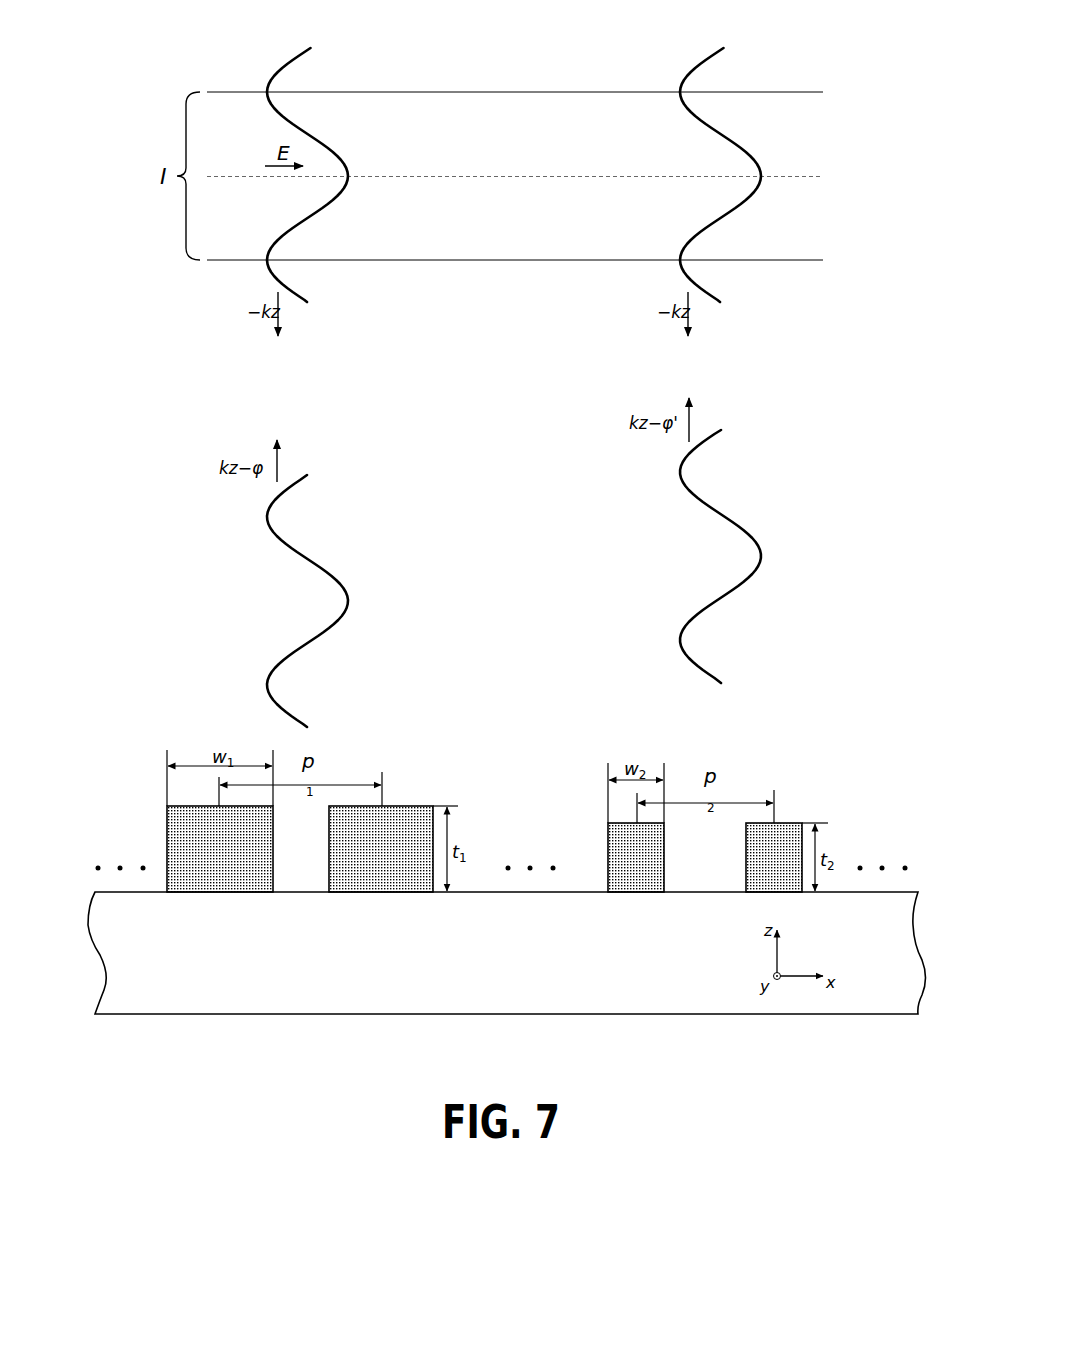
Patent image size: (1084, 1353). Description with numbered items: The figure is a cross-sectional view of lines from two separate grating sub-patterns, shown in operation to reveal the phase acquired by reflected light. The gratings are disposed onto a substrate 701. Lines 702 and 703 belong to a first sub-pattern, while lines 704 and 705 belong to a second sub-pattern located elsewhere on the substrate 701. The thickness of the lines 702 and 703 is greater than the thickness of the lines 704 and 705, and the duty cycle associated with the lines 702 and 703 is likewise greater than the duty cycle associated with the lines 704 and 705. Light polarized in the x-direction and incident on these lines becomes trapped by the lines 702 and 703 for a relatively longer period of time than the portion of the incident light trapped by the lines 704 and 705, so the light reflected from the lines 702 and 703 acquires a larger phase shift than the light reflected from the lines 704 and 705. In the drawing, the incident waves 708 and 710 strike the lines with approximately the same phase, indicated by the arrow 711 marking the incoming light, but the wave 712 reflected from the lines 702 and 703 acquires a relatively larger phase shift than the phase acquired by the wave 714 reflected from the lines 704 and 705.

The substrate 701 is at (553, 972).
The line 702 is at (167, 812).
The line 703 is at (410, 812).
The line 704 is at (608, 842).
The line 705 is at (785, 820).
The incident wave 708 is at (275, 62).
The incident wave 710 is at (690, 62).
The incident light 711 is at (433, 52).
The reflected wave 712 is at (333, 572).
The reflected wave 714 is at (760, 541).